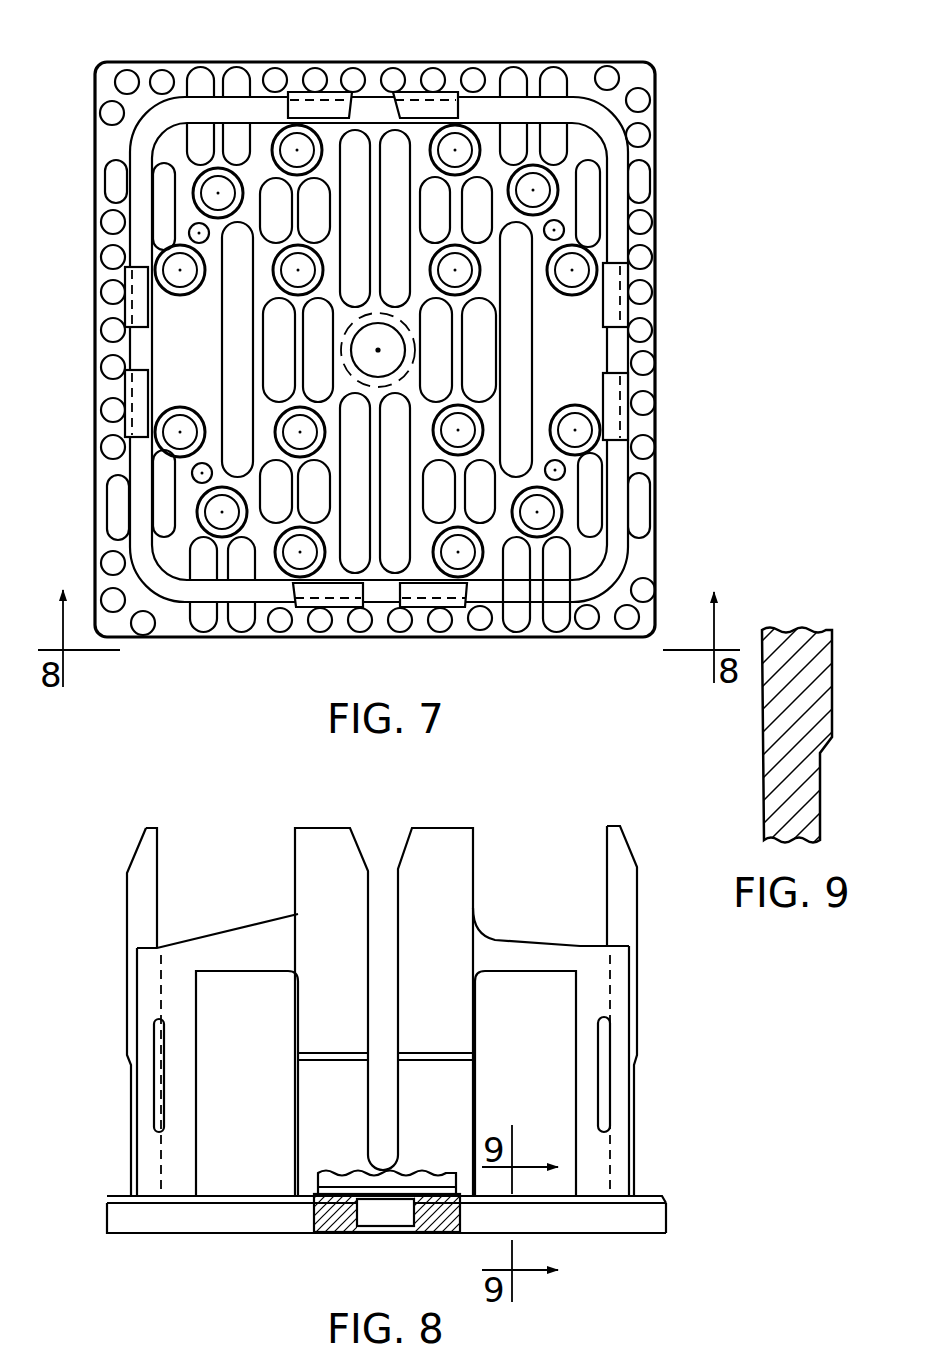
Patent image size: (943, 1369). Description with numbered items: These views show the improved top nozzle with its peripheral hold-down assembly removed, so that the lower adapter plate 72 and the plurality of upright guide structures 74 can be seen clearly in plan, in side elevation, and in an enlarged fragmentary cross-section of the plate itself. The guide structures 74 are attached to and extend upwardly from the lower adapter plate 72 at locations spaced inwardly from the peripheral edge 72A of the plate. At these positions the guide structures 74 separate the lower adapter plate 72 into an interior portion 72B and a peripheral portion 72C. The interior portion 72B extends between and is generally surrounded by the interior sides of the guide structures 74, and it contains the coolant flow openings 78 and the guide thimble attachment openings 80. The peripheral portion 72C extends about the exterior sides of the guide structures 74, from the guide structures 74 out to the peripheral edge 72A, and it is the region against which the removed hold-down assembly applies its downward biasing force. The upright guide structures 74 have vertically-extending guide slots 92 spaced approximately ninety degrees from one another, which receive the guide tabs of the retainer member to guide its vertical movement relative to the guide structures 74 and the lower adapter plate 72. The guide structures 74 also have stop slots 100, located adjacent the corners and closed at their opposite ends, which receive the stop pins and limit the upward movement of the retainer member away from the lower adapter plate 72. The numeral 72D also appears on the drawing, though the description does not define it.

In FIG. 7, the lower adapter plate 72 is at (662, 236).
In FIG. 9, the lower adapter plate 72 is at (762, 756).
In FIG. 8, the lower adapter plate 72 is at (663, 1185).
In FIG. 7, the peripheral edge 72A is at (655, 472).
In FIG. 8, the peripheral edge 72A is at (570, 1213).
In FIG. 7, the interior portion 72B is at (505, 578).
In FIG. 7, the peripheral portion 72C is at (645, 552).
In FIG. 8, the peripheral portion 72C is at (638, 1195).
In FIG. 7, the edge of base plate 72D is at (643, 613).
In FIG. 8, the edge of base plate 72D is at (667, 1215).
In FIG. 7, the upright guide structures 74 is at (288, 100).
In FIG. 8, the upright guide structures 74 is at (246, 923).
In FIG. 7, the coolant flow openings 78 is at (225, 300).
In FIG. 7, the guide thimble attachment openings 80 is at (458, 250).
In FIG. 7, the guide slots 92 is at (373, 110).
In FIG. 8, the guide slots 92 is at (385, 869).
In FIG. 7, the stop slots 100 is at (158, 140).
In FIG. 8, the stop slots 100 is at (155, 1080).